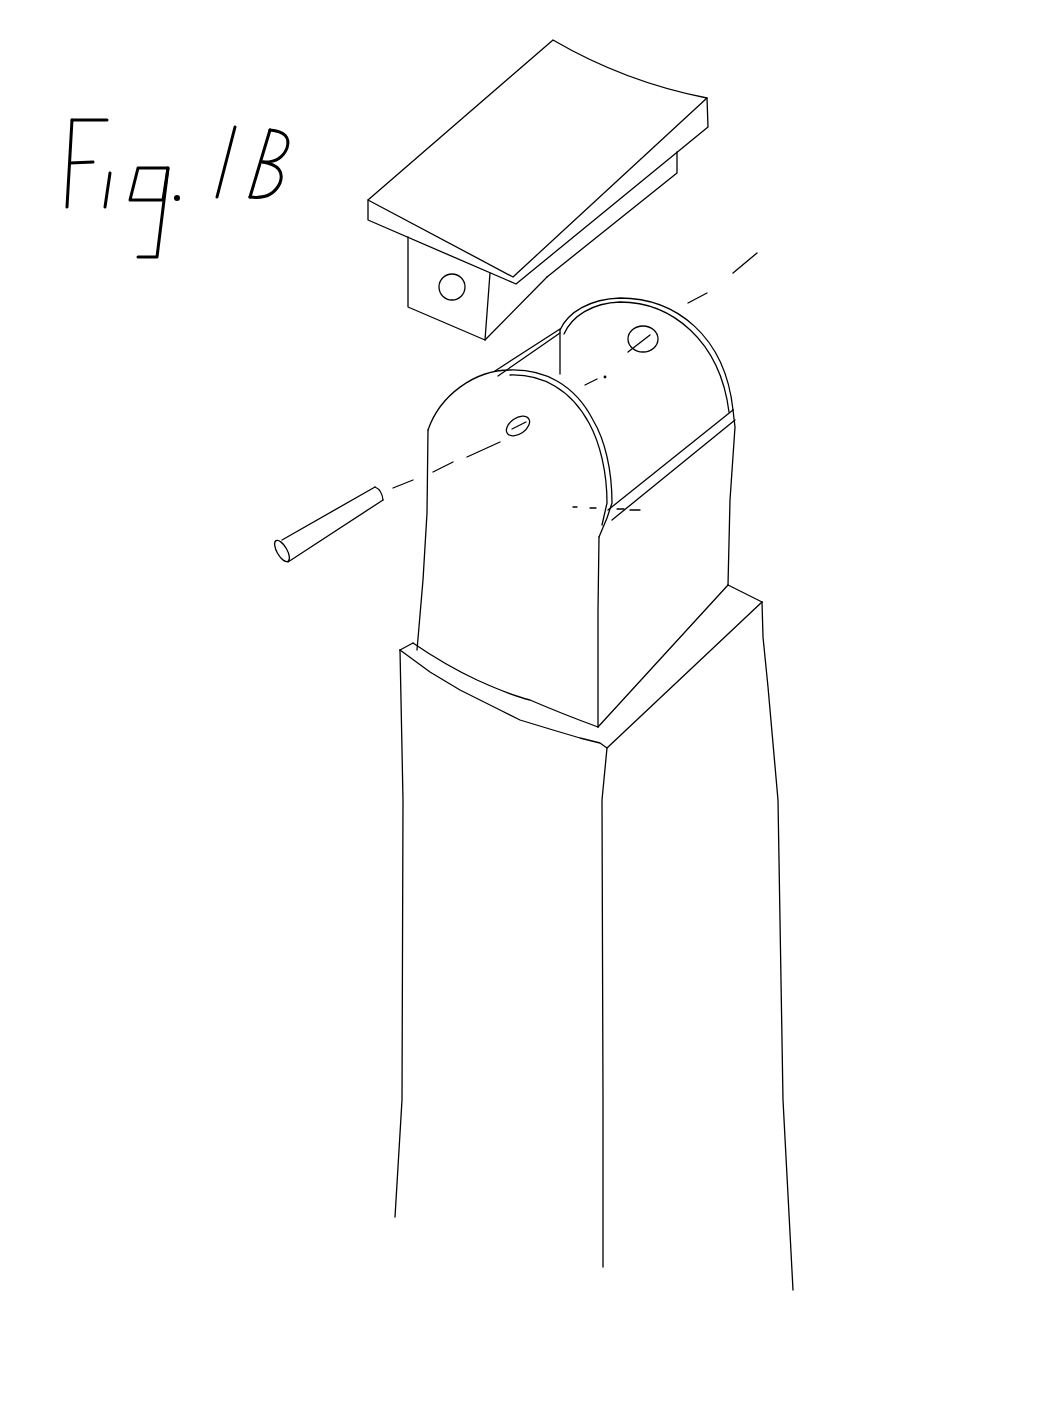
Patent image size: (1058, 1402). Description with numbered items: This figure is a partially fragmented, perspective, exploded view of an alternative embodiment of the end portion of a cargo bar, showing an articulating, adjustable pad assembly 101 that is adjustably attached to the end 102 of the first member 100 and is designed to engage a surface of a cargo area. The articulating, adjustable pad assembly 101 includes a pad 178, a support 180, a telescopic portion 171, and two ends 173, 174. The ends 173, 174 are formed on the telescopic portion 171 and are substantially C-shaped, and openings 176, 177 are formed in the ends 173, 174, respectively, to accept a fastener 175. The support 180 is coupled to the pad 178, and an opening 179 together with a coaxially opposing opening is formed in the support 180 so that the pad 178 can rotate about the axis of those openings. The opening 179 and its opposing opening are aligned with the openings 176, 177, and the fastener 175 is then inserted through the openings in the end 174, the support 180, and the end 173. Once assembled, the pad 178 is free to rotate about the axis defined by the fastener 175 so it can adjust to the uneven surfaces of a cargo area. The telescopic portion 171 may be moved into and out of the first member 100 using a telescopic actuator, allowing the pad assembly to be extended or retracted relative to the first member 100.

The first member 100 is at (798, 918).
The articulating, adjustable pad assembly 101 is at (305, 438).
The end 102 is at (762, 812).
The telescopic portion 171 is at (716, 534).
The end 173 is at (700, 355).
The end 174 is at (445, 415).
The fastener 175 is at (292, 553).
The opening 176 is at (648, 326).
The opening 177 is at (518, 437).
The pad 178 is at (652, 100).
The opening 179 is at (447, 300).
The support 180 is at (415, 267).